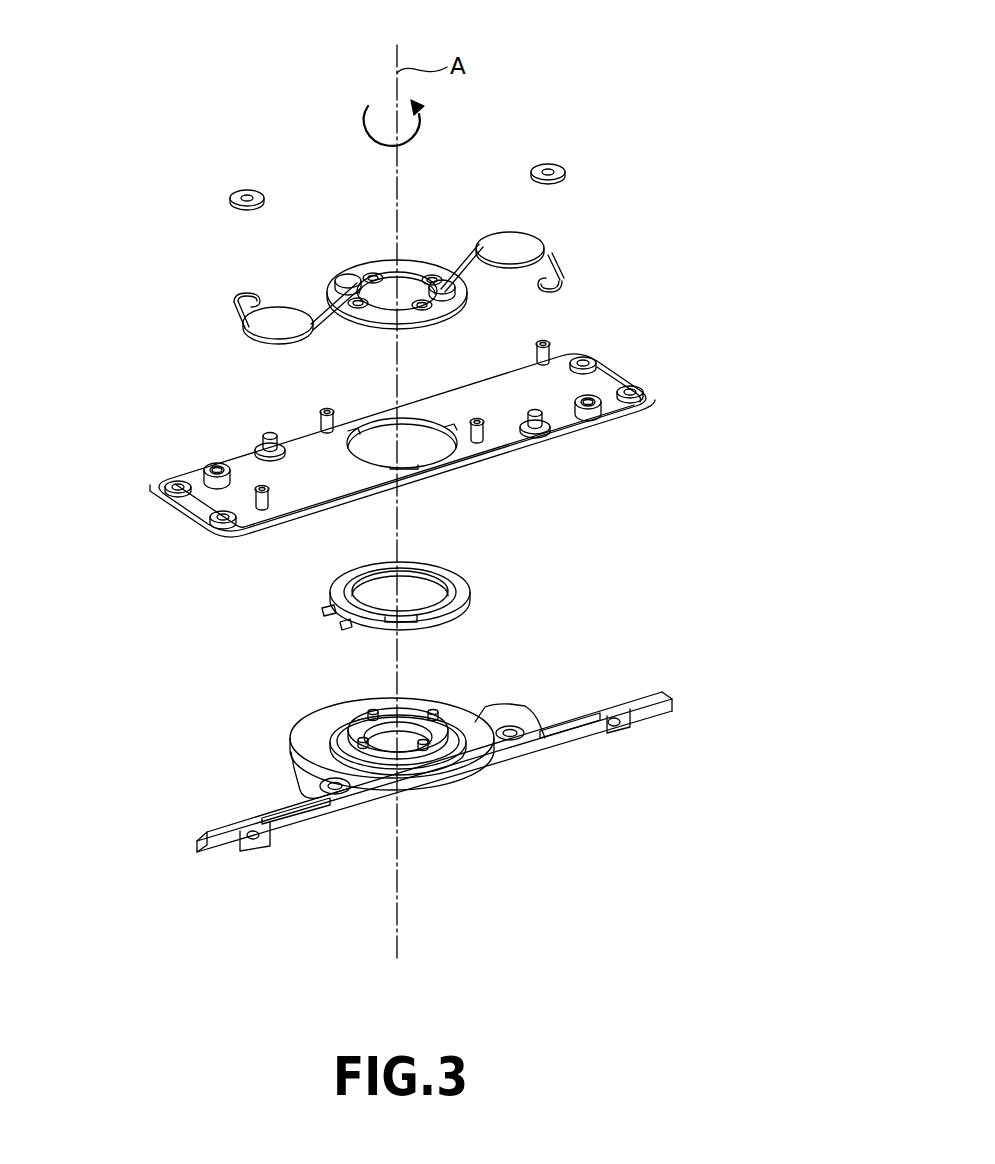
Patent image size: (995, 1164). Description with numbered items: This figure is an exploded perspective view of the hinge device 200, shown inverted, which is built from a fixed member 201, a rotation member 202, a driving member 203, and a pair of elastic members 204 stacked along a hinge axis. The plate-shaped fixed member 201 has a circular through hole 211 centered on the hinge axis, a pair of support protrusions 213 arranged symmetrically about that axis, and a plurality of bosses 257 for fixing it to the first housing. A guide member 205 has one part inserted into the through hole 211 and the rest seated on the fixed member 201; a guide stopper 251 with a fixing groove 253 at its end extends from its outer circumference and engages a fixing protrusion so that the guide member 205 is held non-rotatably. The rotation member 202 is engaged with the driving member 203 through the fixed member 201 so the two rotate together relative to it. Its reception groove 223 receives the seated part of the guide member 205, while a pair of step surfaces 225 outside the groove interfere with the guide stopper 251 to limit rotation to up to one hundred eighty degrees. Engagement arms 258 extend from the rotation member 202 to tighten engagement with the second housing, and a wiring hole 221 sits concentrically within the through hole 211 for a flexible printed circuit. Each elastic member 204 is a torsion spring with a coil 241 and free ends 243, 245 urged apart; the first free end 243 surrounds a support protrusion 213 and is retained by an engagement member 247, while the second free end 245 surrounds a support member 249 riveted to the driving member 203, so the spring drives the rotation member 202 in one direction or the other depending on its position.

The hinge device 200 is at (233, 96).
The fixed member 201 is at (421, 444).
The rotation member 202 is at (478, 781).
The driving member 203 is at (378, 293).
The elastic member 204 is at (389, 299).
The guide member 205 is at (385, 615).
The through hole 211 is at (420, 455).
The support protrusion 213 is at (265, 446).
The wiring hole 221 is at (408, 740).
The reception groove 223 is at (457, 763).
The step surface 225 is at (333, 768).
The coil 241 is at (272, 347).
The first free end 243 is at (233, 298).
The second free end 245 is at (333, 288).
The engagement member 247 is at (236, 198).
The support member 249 is at (352, 276).
The guide stopper 251 is at (322, 613).
The fixing groove 253 is at (327, 625).
The boss 257 is at (662, 398).
The engagement arm 258 is at (658, 708).